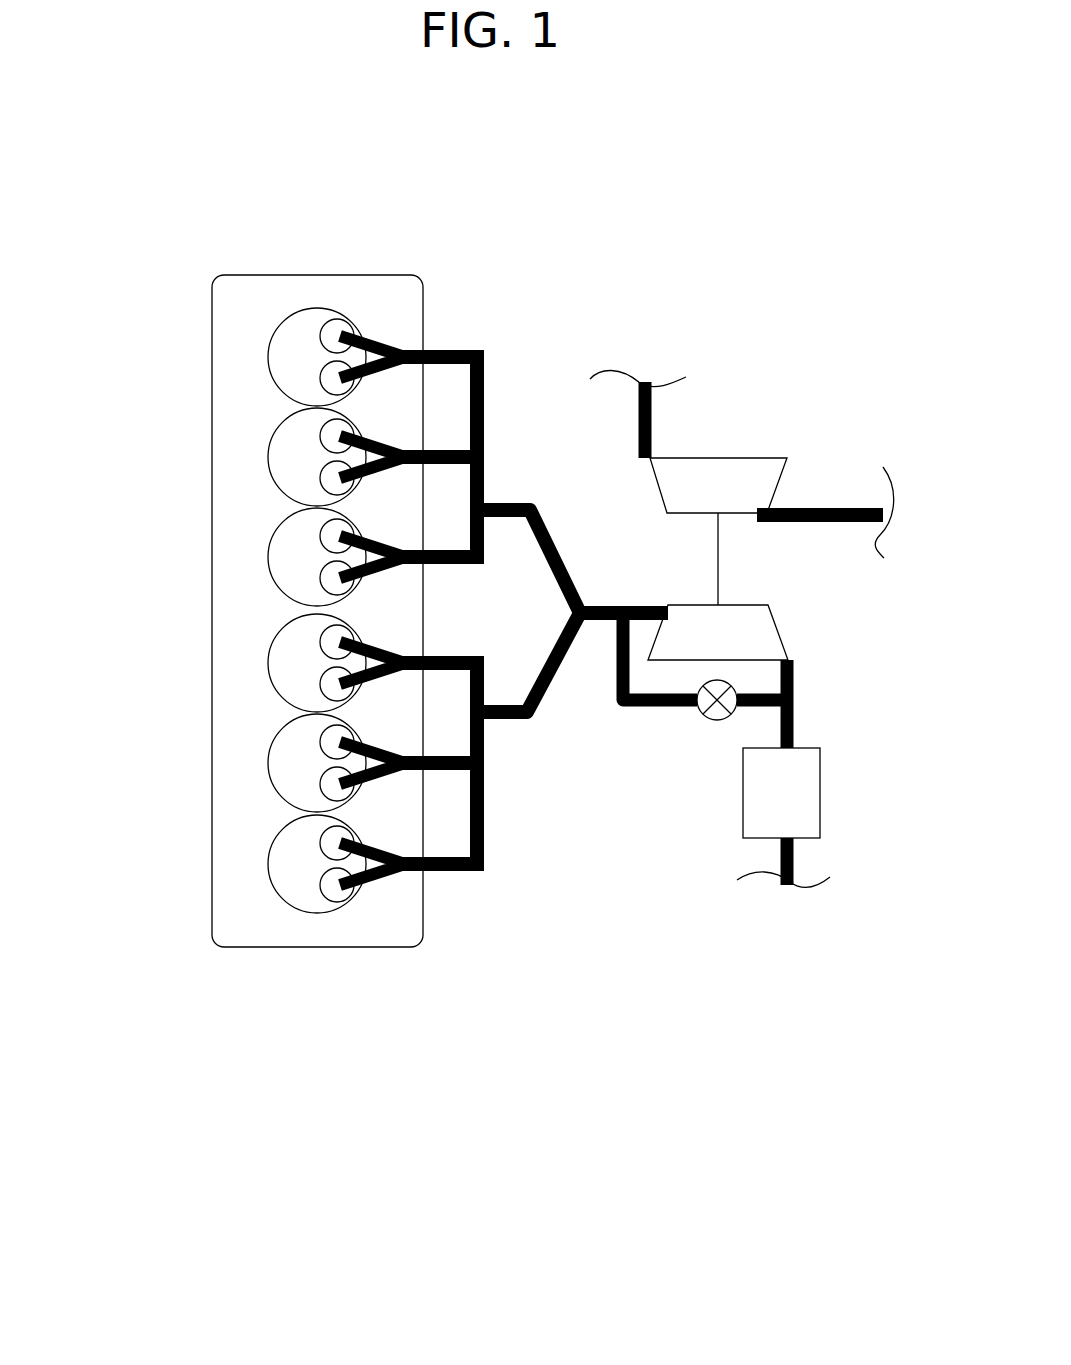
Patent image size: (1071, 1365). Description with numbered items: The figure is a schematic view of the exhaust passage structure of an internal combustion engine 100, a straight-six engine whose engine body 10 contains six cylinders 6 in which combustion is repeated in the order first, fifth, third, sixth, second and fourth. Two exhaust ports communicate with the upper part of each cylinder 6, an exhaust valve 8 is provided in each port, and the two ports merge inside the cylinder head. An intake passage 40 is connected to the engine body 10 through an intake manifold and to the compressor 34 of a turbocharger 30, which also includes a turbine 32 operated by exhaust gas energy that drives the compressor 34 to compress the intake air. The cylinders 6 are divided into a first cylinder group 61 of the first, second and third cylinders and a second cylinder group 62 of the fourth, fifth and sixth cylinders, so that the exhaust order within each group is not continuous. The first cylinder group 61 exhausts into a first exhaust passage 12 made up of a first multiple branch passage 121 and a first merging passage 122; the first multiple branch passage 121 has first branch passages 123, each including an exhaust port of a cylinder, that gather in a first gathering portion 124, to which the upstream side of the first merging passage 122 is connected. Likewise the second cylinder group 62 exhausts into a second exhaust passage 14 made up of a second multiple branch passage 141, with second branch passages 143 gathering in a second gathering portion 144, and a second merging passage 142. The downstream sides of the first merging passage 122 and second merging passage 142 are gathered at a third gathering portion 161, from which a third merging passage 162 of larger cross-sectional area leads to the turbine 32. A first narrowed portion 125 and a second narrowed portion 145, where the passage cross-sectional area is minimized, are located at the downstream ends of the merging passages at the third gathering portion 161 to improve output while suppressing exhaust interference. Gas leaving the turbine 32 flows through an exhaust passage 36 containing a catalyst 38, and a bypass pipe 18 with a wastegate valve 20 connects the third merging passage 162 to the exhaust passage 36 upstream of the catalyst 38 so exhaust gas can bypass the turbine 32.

The cylinder 6 is at (234, 610).
The exhaust valve 8 is at (253, 615).
The engine body 10 is at (314, 275).
The first exhaust passage 12 is at (521, 347).
The first multiple branch passage 121 is at (465, 362).
The first merging passage 122 is at (518, 500).
The first branch passages 123 is at (372, 340).
The first gathering portion 124 is at (490, 500).
The first narrowed portion 125 is at (578, 603).
The second exhaust passage 14 is at (550, 898).
The second multiple branch passage 141 is at (465, 888).
The second merging passage 142 is at (527, 722).
The second branch passages 143 is at (393, 877).
The second gathering portion 144 is at (490, 722).
The second narrowed portion 145 is at (575, 632).
The bypass pipe 18 is at (682, 682).
The third gathering portion 161 is at (590, 630).
The third merging passage 162 is at (640, 607).
The wastegate valve 20 is at (717, 722).
The turbocharger 30 is at (786, 471).
The turbine 32 is at (780, 628).
The compressor 34 is at (762, 458).
The exhaust passage 36 is at (793, 857).
The catalyst 38 is at (820, 797).
The intake passage 40 is at (653, 422).
The first cylinder group 61 is at (95, 333).
The second cylinder group 62 is at (95, 642).
The internal combustion engine 100 is at (727, 245).